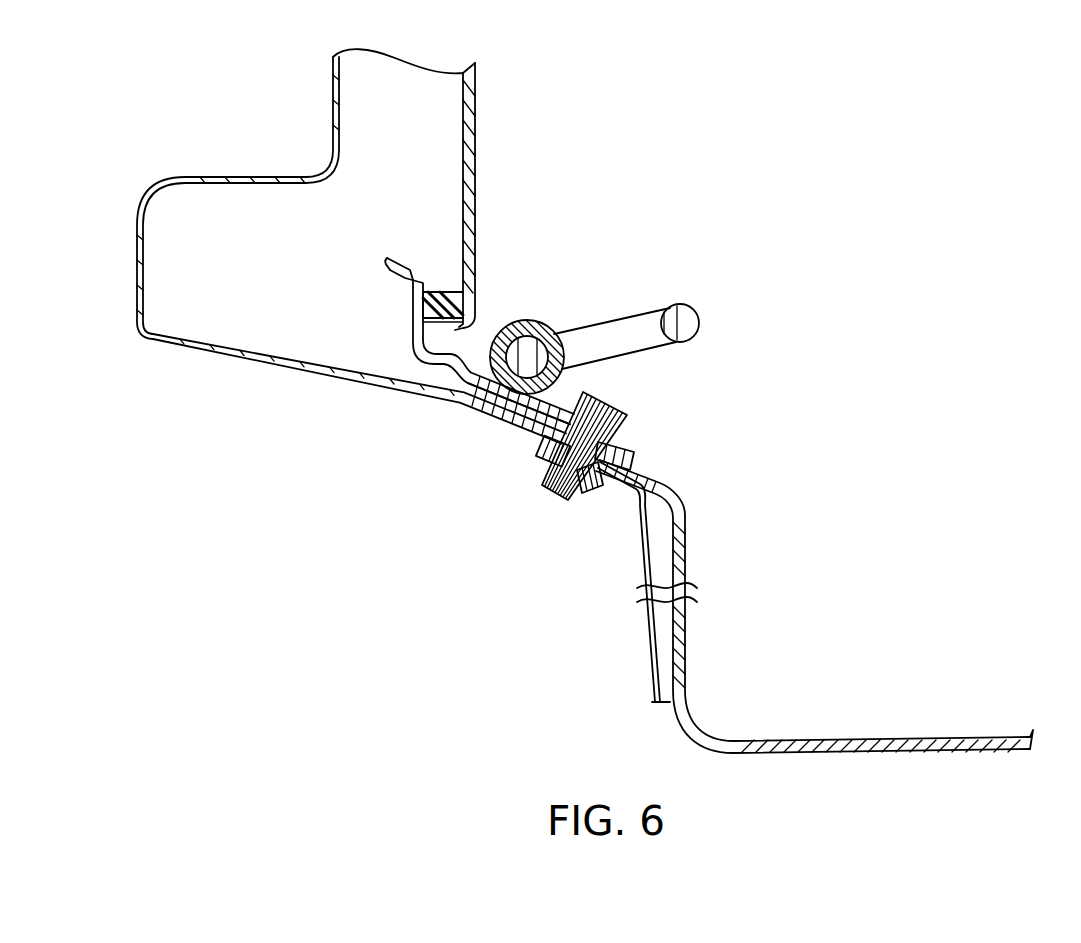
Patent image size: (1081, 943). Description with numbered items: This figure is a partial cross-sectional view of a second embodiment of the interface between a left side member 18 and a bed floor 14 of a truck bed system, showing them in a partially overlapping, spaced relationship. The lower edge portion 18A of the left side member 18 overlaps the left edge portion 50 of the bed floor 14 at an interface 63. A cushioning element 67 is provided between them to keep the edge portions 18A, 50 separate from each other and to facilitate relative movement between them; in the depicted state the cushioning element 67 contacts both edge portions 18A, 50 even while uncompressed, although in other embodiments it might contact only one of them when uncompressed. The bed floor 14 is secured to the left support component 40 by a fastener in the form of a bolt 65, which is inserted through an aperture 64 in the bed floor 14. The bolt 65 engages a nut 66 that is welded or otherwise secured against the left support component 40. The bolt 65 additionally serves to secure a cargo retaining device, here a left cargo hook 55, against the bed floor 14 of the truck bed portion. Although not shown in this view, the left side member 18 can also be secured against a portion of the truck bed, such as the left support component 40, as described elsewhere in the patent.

The bed floor 14 is at (743, 535).
The left side member 18 is at (540, 110).
The lower edge portion 18A is at (492, 261).
The left support component 40 is at (338, 392).
The left edge portion 50 is at (394, 315).
The left cargo hook 55 is at (554, 319).
The interface 63 is at (470, 338).
The aperture 64 is at (546, 438).
The bolt 65 is at (627, 413).
The nut 66 is at (590, 484).
The cushioning element 67 is at (443, 290).